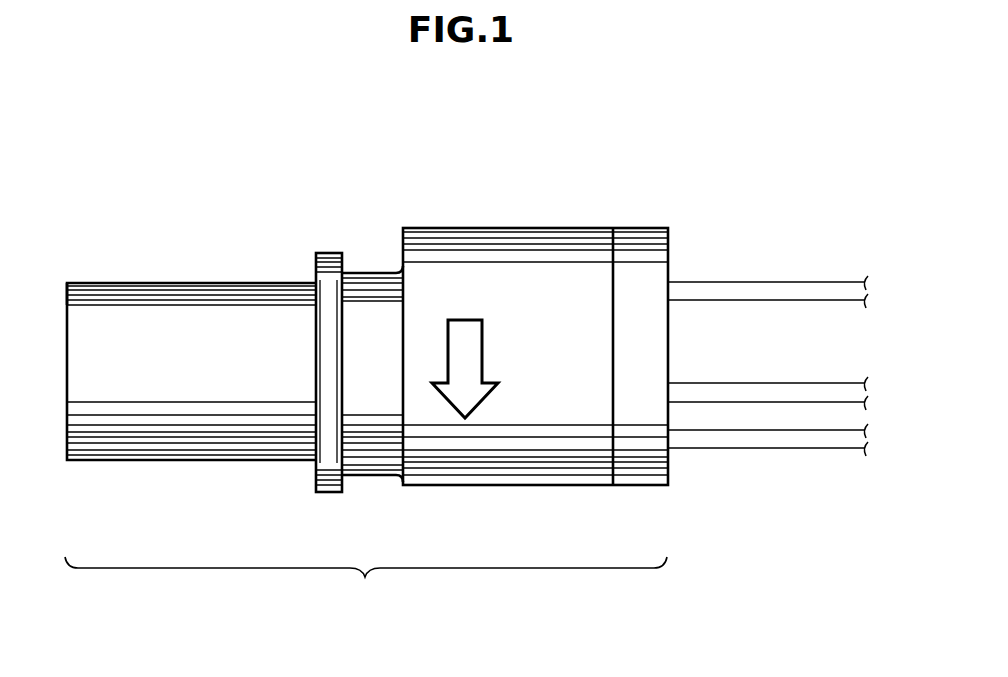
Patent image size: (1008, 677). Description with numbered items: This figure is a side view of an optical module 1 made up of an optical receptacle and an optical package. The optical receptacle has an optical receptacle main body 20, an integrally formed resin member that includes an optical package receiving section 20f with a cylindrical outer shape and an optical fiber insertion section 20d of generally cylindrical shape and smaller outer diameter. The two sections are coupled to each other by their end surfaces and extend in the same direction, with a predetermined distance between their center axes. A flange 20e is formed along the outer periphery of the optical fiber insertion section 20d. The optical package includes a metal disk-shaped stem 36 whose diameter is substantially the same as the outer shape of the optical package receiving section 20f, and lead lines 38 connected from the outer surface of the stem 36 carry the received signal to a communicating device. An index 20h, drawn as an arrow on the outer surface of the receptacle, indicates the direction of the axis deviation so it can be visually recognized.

The optical module 1 is at (366, 582).
The optical receptacle main body 20 is at (232, 284).
The optical fiber insertion section 20d is at (89, 292).
The flange 20e is at (325, 493).
The optical package receiving section 20f is at (467, 238).
The index 20h is at (474, 350).
The stem 36 is at (641, 230).
The lead line 38 is at (762, 282).